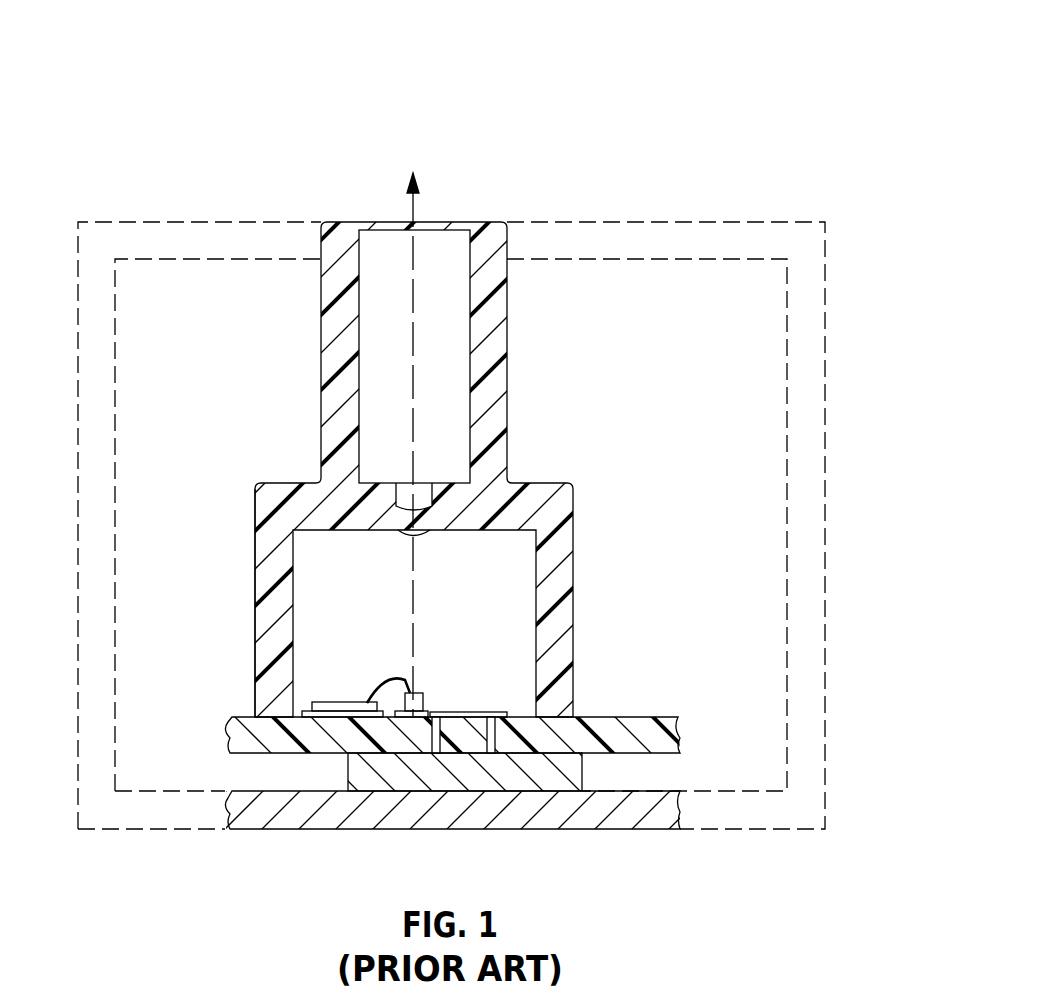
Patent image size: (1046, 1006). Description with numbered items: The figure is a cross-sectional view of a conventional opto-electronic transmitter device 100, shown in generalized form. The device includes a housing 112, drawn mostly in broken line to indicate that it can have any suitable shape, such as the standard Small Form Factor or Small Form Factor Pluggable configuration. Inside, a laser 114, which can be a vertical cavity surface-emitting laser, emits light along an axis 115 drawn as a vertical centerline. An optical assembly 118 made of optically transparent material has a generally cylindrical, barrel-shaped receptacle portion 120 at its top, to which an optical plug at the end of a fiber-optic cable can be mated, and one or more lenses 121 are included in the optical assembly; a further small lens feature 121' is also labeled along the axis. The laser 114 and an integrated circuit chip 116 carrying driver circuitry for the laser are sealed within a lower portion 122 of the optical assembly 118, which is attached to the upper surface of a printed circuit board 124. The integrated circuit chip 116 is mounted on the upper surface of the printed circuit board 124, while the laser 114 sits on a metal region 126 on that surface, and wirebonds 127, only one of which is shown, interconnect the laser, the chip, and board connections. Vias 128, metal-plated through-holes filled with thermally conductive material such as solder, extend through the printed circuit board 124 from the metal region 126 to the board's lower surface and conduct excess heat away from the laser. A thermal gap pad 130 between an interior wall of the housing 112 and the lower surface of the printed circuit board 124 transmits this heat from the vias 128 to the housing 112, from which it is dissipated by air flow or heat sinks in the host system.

The opto-electronic transmitter device 100 is at (666, 87).
The housing 112 is at (276, 830).
The laser 114 is at (424, 698).
The axis 115 is at (418, 362).
The integrated circuit chip 116 is at (322, 700).
The optical assembly 118 is at (610, 541).
The receptacle portion 120 is at (440, 222).
The lens 121 is at (440, 553).
The neck opening 121' is at (400, 472).
The lower portion 122 is at (255, 580).
The printed circuit board 124 is at (604, 717).
The metal region 126 is at (465, 715).
The wirebond 127 is at (385, 686).
The vias 128 is at (436, 755).
The thermal gap pad 130 is at (582, 772).